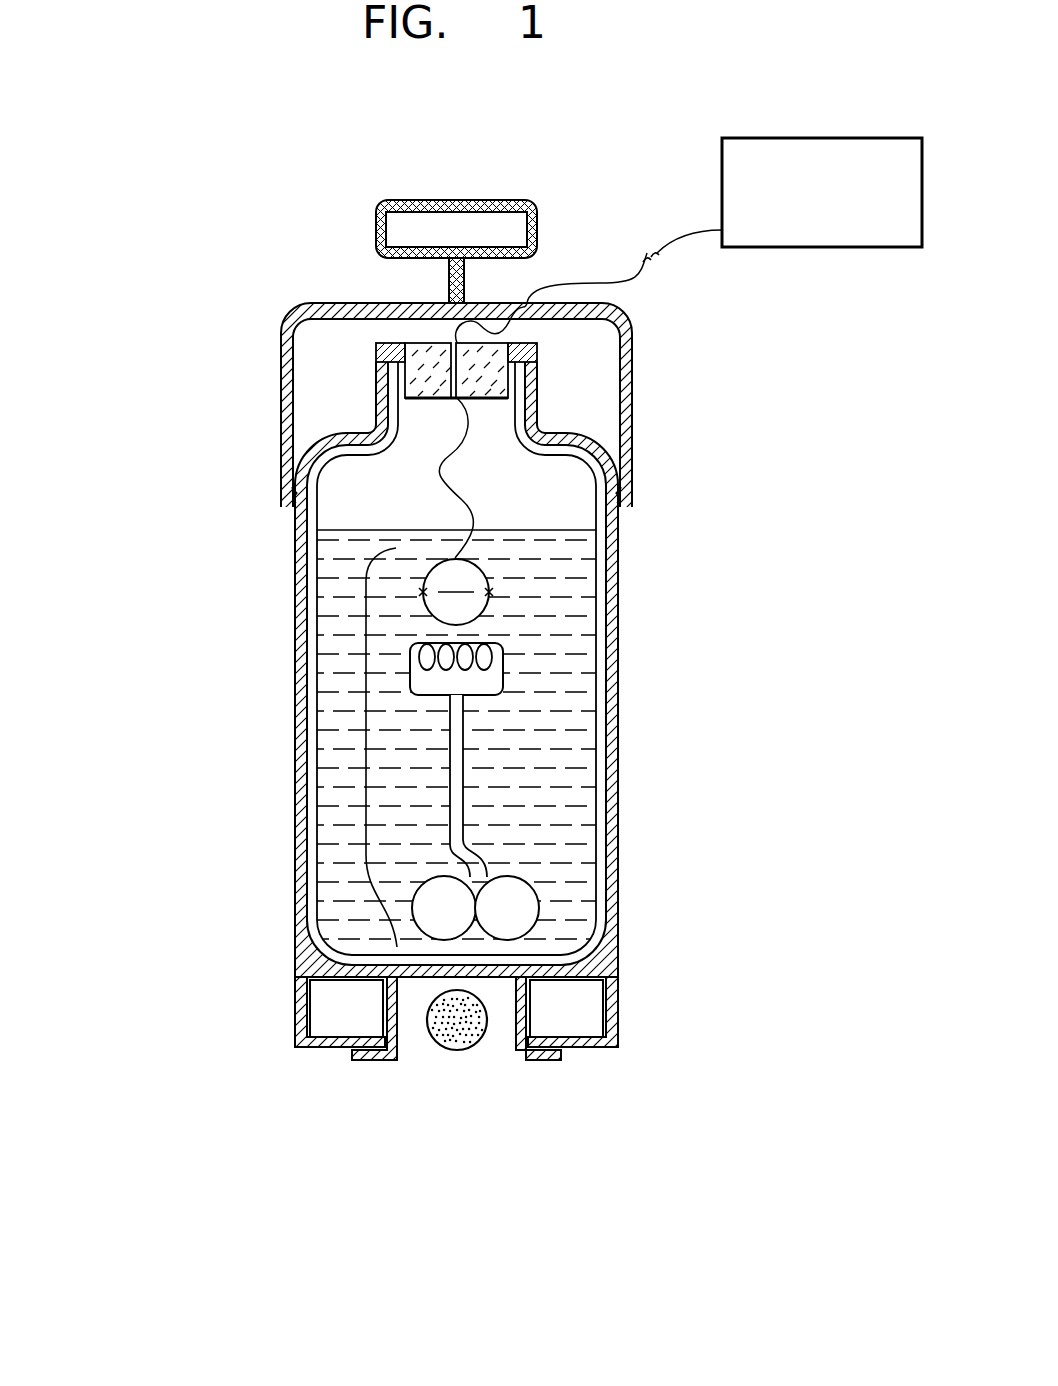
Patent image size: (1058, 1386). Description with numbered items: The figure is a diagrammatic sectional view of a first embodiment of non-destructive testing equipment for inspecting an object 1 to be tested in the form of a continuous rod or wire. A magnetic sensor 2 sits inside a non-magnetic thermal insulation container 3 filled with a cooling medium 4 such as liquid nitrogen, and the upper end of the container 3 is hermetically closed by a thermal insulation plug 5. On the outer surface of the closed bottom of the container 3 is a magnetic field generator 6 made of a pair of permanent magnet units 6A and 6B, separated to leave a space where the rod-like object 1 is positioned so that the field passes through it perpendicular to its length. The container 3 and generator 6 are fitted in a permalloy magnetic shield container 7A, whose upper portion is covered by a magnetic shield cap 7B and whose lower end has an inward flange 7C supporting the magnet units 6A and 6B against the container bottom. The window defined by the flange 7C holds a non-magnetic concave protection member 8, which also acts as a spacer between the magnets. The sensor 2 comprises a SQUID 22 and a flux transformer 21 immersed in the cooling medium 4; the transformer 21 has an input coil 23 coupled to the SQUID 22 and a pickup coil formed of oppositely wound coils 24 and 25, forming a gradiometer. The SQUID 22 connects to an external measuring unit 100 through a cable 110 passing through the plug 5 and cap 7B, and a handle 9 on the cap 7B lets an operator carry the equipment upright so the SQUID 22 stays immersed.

The object to be tested 1 is at (457, 1030).
The magnetic sensor 2 is at (504, 672).
The thermal insulation container 3 is at (608, 732).
The cooling medium 4 is at (553, 548).
The thermal insulation plug 5 is at (408, 350).
The magnetic field generator 6 is at (401, 724).
The permanent magnet unit 6A is at (337, 1027).
The permanent magnet unit 6B is at (604, 1000).
The magnetic shield container 7A is at (615, 845).
The magnetic shield cap 7B is at (633, 403).
The inward flange 7C is at (587, 1047).
The protection member 8 is at (537, 1060).
The handle 9 is at (537, 232).
The flux transformer 21 is at (472, 773).
The SQUID 22 is at (424, 580).
The input coil 23 is at (503, 663).
The coil 24 is at (362, 860).
The coil 25 is at (537, 897).
The measuring unit 100 is at (777, 247).
The cable 110 is at (620, 283).